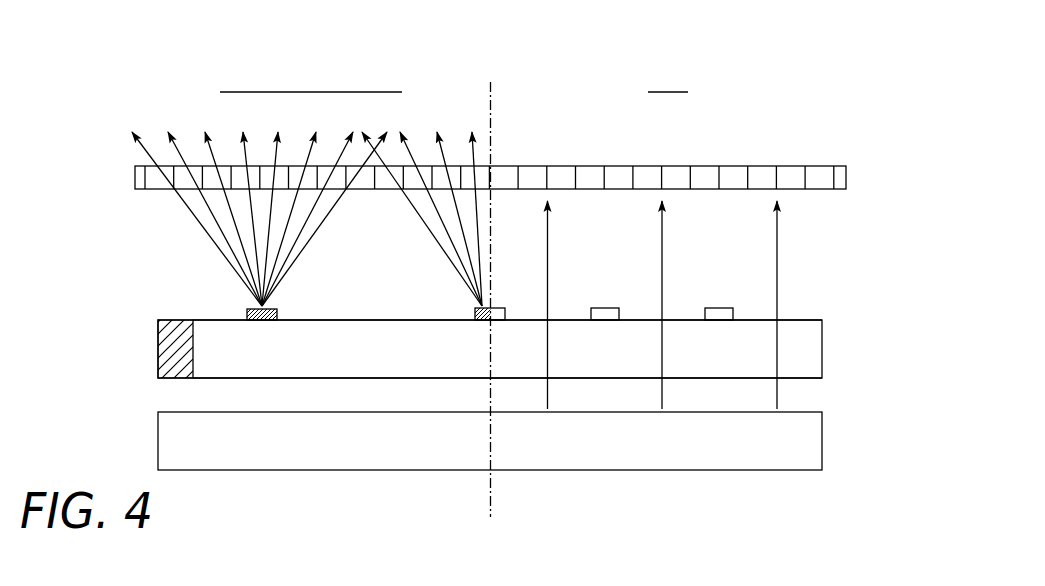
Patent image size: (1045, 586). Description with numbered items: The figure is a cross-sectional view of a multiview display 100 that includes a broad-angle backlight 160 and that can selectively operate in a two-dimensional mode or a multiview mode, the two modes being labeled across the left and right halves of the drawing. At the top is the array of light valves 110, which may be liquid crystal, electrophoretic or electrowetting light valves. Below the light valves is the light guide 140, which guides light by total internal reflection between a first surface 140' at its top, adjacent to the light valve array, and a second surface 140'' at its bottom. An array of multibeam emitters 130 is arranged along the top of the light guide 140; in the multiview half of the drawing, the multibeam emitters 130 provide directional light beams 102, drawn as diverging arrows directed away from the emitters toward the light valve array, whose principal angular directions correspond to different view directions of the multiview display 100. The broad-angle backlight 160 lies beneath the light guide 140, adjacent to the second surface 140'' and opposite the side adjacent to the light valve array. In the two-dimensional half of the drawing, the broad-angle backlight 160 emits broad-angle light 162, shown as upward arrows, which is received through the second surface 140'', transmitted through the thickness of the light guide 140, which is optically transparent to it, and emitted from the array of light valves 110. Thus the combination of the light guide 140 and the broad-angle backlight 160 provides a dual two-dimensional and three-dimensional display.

The multiview display 100 is at (803, 57).
The directional light beams 102 is at (188, 232).
The light valves 110 is at (123, 172).
The multibeam emitters 130 is at (238, 303).
The light guide 140 is at (542, 349).
The first surface 140' is at (560, 311).
The second surface 140'' is at (563, 389).
The broad-angle backlight 160 is at (822, 437).
The broad-angle light 162 is at (822, 217).